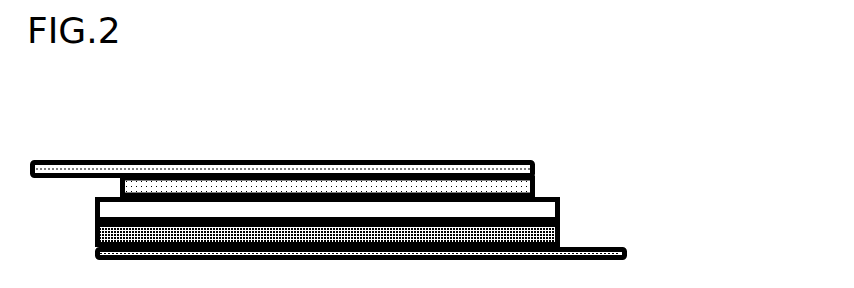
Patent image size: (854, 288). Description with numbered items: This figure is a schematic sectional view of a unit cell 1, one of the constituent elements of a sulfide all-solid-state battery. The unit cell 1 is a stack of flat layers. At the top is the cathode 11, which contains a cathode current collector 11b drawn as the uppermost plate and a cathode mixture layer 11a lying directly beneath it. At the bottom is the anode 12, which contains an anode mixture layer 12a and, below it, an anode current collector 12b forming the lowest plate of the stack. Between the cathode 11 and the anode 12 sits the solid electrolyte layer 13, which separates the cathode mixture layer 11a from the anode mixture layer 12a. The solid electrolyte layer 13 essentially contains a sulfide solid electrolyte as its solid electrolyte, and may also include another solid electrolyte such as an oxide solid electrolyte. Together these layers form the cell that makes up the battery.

The unit cell 1 is at (334, 94).
The cathode 11 is at (348, 175).
The cathode mixture layer 11a is at (535, 183).
The cathode current collector 11b is at (535, 164).
The anode 12 is at (420, 239).
The anode mixture layer 12a is at (560, 228).
The anode current collector 12b is at (623, 249).
The solid electrolyte layer 13 is at (560, 207).